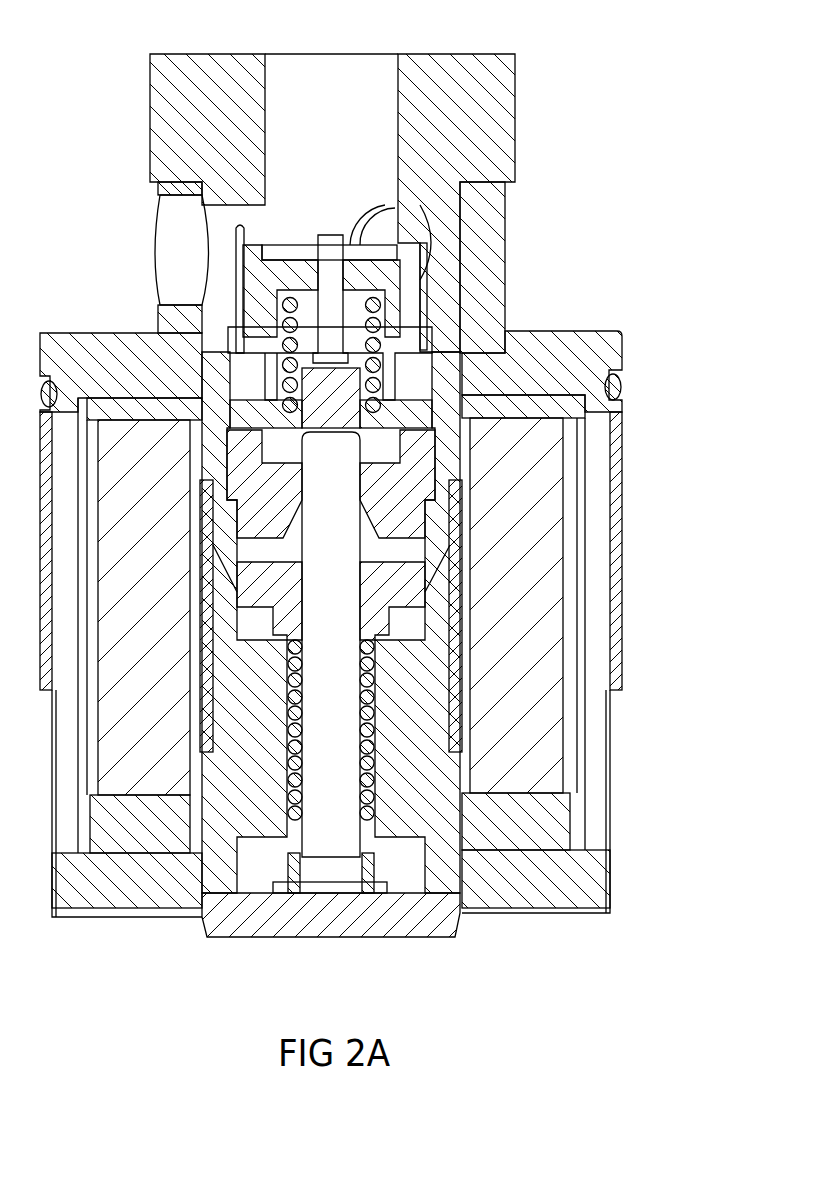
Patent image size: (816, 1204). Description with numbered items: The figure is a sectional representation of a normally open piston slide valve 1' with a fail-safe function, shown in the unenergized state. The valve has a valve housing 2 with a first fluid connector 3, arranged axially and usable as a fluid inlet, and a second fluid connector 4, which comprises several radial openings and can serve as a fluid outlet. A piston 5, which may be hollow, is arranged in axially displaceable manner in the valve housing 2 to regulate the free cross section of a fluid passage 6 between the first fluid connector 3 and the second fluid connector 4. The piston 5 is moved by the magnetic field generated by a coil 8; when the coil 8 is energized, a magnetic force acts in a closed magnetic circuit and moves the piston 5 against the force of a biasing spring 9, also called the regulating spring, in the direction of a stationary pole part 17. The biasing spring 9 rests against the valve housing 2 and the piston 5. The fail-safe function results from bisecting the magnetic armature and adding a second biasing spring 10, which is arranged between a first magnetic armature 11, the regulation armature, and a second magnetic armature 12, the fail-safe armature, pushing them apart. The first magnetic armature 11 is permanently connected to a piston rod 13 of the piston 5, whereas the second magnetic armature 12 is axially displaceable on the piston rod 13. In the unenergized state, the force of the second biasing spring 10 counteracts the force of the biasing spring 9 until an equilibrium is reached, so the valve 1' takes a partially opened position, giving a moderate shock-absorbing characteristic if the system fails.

The piston slide valve 1' is at (350, 471).
The valve housing 2 is at (618, 333).
The first fluid connector 3 is at (330, 70).
The second fluid connector 4 is at (175, 248).
The piston 5 is at (237, 284).
The fluid passage 6 is at (236, 233).
The coil 8 is at (548, 490).
The biasing spring 9 is at (380, 342).
The second biasing spring 10 is at (365, 767).
The first magnetic armature 11 is at (390, 593).
The second magnetic armature 12 is at (395, 757).
The piston rod 13 is at (327, 840).
The stationary pole part 17 is at (268, 493).